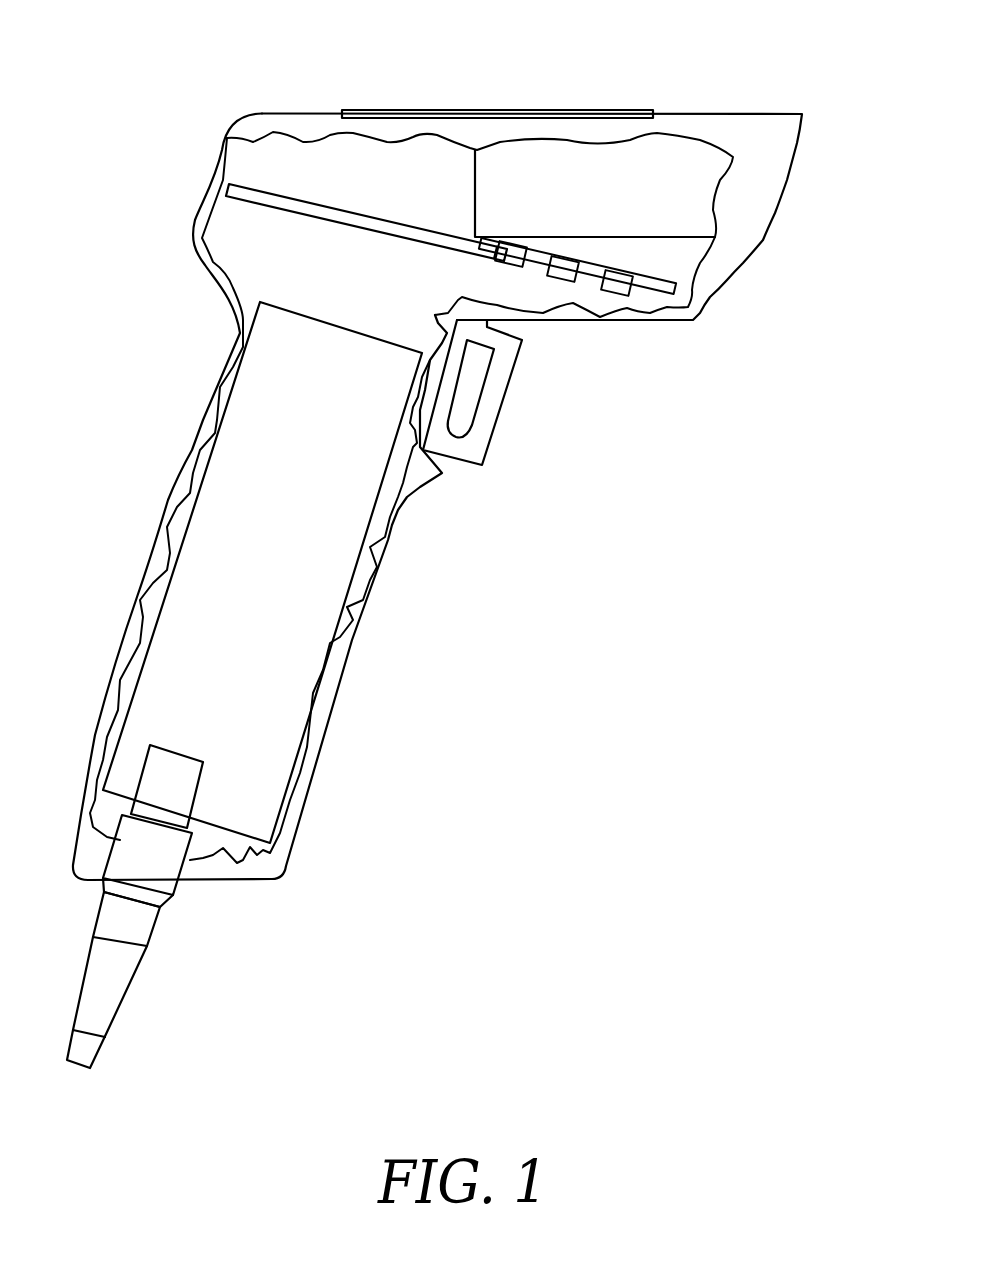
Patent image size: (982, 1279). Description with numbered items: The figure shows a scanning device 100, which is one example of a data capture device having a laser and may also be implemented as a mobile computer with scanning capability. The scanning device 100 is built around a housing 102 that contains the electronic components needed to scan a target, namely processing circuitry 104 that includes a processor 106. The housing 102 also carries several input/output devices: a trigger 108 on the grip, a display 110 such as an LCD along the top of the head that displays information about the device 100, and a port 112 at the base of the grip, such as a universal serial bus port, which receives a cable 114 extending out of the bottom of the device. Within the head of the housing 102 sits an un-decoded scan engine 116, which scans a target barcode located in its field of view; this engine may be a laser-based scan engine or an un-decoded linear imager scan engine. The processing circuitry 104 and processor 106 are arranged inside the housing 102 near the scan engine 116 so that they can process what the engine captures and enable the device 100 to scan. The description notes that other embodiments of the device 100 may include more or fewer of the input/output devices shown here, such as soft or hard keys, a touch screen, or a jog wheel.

The scanning device 100 is at (415, 42).
The housing 102 is at (307, 785).
The processing circuitry 104 is at (272, 185).
The processor 106 is at (615, 292).
The trigger 108 is at (492, 418).
The display 110 is at (506, 108).
The port 112 is at (178, 753).
The cable 114 is at (123, 995).
The un-decoded scan engine 116 is at (690, 157).